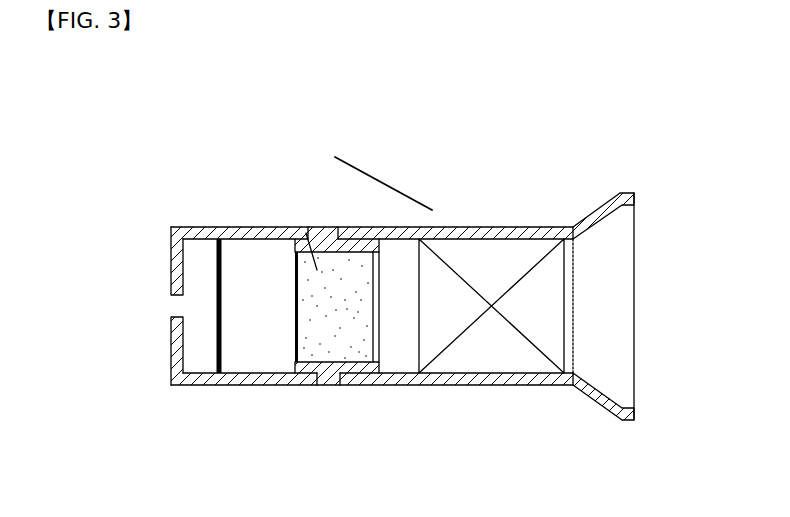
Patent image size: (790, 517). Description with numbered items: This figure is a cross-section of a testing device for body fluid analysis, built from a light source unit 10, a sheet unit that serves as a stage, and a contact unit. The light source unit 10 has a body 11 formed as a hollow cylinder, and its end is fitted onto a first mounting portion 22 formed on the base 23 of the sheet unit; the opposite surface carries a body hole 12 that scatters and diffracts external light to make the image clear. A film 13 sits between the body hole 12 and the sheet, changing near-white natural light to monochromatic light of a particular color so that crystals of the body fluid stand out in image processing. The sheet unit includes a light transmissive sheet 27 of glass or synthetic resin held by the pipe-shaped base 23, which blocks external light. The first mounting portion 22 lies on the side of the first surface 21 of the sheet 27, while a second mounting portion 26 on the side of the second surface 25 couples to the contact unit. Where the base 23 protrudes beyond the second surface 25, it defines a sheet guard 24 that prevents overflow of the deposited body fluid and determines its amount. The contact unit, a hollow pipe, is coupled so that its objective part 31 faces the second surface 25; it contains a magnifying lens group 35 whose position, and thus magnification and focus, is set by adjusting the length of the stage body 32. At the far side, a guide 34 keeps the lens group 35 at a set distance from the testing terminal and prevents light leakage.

The light source unit 10 is at (321, 297).
The body 11 is at (245, 380).
The body hole 12 is at (172, 306).
The film 13 is at (214, 263).
The first surface 21 is at (345, 300).
The first mounting portion 22 is at (300, 378).
The base 23 is at (335, 245).
The sheet guard 24 is at (377, 373).
The second surface 25 is at (378, 272).
The second mounting portion 26 is at (352, 240).
The sheet 27 is at (306, 233).
The objective part 31 is at (418, 318).
The stage body 32 is at (500, 233).
The guide 34 is at (598, 212).
The magnifying lens group 35 is at (553, 322).